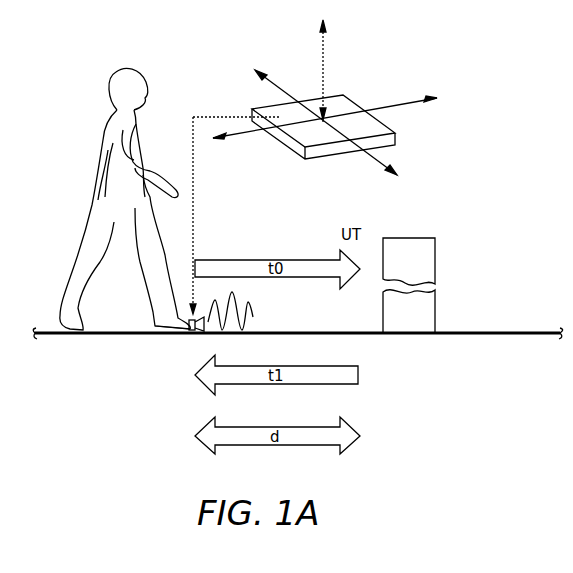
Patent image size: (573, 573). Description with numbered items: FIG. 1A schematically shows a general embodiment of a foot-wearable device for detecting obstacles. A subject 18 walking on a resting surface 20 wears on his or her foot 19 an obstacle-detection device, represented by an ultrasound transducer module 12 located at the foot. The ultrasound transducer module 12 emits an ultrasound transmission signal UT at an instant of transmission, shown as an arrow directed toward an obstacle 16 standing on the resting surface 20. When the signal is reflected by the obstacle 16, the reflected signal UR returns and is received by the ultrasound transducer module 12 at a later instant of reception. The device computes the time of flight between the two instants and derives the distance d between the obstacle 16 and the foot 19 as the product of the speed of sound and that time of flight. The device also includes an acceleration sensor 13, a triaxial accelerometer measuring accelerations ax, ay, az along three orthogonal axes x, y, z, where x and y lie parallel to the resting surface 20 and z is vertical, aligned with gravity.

The subject 18 is at (134, 63).
The acceleration sensor 13 is at (362, 108).
The ultrasound transducer module 12 is at (194, 335).
The foot 19 is at (157, 328).
The obstacle 16 is at (435, 315).
The resting surface 20 is at (66, 335).